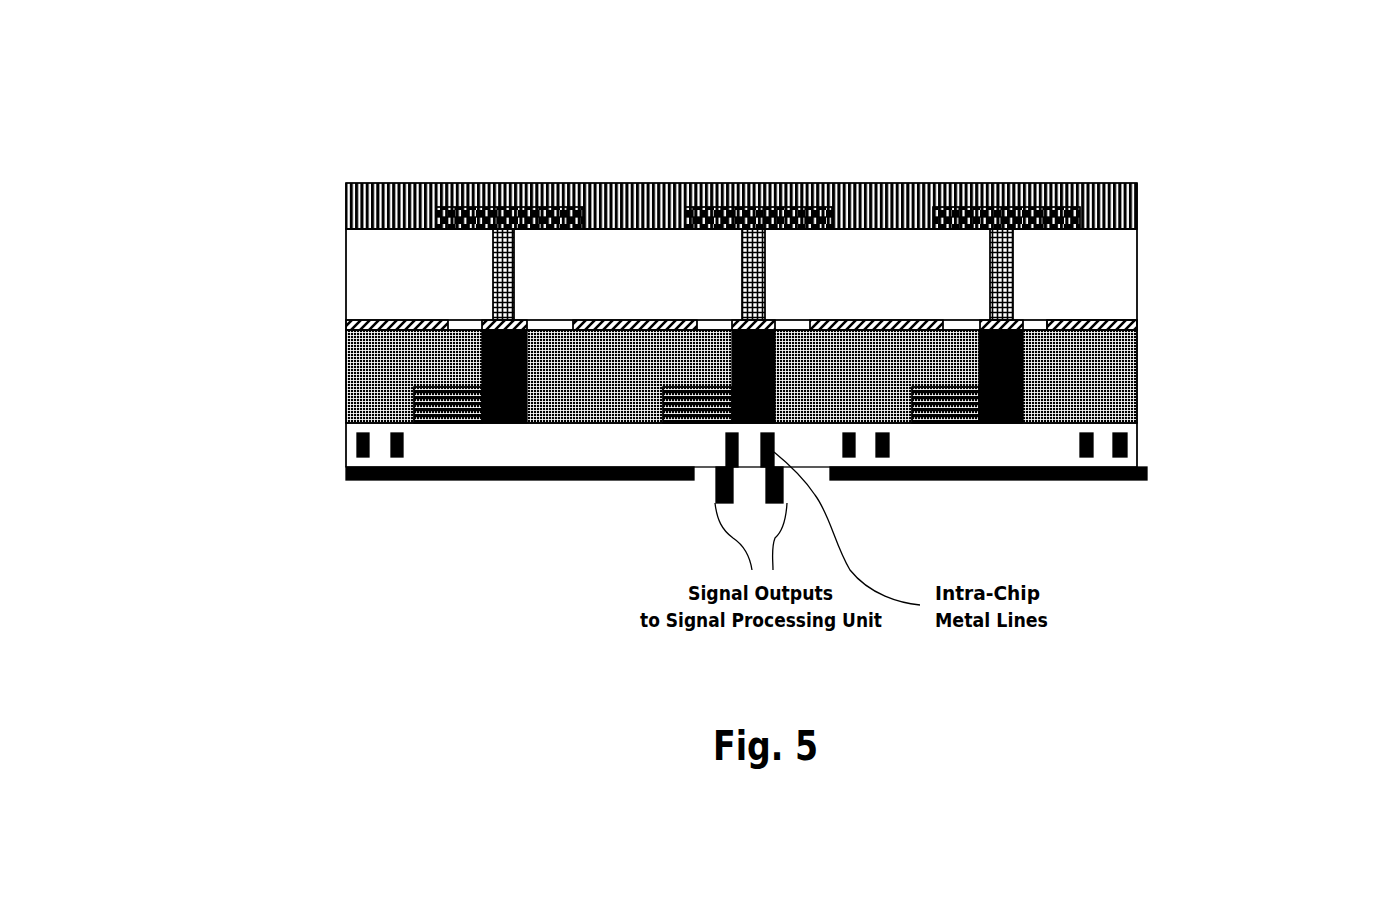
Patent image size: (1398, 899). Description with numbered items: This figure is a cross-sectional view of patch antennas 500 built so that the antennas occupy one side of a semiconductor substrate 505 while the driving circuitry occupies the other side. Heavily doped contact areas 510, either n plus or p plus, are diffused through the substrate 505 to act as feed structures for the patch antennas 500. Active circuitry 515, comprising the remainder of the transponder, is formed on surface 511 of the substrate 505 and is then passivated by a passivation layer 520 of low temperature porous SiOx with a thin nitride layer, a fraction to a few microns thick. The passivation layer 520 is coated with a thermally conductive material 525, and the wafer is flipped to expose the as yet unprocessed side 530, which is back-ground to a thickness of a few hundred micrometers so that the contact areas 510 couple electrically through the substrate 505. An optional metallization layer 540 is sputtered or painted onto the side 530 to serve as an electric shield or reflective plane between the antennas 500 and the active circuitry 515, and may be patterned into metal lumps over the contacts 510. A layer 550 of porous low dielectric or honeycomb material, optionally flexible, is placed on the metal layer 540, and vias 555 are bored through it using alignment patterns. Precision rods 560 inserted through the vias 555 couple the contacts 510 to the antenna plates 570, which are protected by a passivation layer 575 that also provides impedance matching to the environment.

The patch antennas 500 is at (1113, 137).
The passivation layer 575 is at (346, 206).
The antenna plates 570 is at (760, 186).
The layer of porous low dielectric material 550 is at (346, 273).
The precision rods 560 is at (990, 292).
The vias 555 is at (1013, 303).
The side of substrate 530 is at (346, 330).
The metallization layer 540 is at (1137, 330).
The substrate 505 is at (346, 375).
The heavily doped contact areas 510 is at (1023, 353).
The active circuitry 515 is at (676, 424).
The passivation layer 520 is at (483, 447).
The surface of substrate 511 is at (346, 422).
The thermally conductive material 525 is at (346, 480).